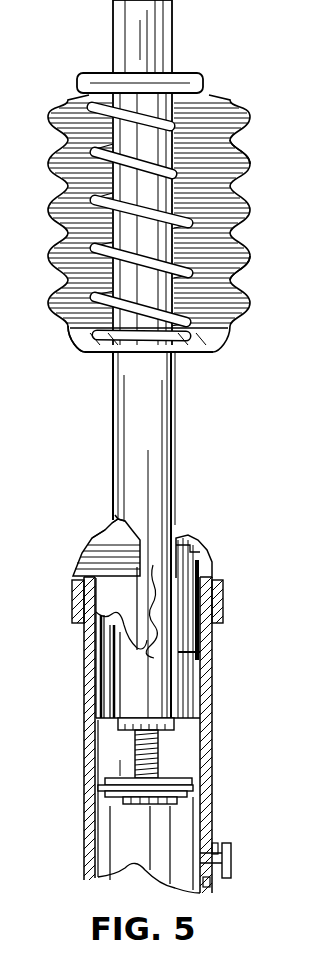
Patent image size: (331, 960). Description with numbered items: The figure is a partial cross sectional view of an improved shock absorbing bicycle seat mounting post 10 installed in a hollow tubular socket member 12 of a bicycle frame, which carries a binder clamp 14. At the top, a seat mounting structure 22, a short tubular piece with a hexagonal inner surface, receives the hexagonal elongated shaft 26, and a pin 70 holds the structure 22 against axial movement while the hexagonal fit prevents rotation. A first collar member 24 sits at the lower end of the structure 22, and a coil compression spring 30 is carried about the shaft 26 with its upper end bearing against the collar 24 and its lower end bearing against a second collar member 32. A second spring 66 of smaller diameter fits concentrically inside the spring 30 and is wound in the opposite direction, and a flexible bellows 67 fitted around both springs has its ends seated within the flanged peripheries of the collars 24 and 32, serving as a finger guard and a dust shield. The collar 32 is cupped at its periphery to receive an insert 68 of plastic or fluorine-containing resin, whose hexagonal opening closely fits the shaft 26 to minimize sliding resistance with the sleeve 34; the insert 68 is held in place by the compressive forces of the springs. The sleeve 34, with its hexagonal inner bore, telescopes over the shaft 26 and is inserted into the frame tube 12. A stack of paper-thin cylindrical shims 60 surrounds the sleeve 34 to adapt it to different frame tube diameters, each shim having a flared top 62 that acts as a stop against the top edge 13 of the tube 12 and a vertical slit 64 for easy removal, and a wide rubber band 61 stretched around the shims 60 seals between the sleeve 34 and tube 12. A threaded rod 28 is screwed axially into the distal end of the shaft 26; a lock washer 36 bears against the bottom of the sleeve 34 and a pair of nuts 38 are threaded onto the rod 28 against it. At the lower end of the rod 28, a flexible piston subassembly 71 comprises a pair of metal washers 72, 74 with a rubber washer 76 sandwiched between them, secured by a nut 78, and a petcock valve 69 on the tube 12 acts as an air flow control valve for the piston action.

The seat mounting post 10 is at (242, 82).
The hollow tubular socket member 12 is at (212, 677).
The top edge 13 is at (205, 550).
The binder clamp 14 is at (222, 598).
The seat mounting structure 22 is at (173, 38).
The first collar member 24 is at (197, 82).
The elongated shaft 26 is at (183, 125).
The threaded rod 28 is at (160, 758).
The coil compression spring 30 is at (240, 233).
The second collar member 32 is at (207, 350).
The sleeve 34 is at (180, 419).
The lock washer 36 is at (120, 722).
The nuts 38 is at (174, 731).
The cylindrical shims 60 is at (202, 647).
The rubber band 61 is at (97, 543).
The flared top 62 is at (115, 523).
The vertical slit 64 is at (143, 585).
The second spring 66 is at (228, 280).
The bellows 67 is at (243, 158).
The insert 68 is at (88, 353).
The petcock valve 69 is at (231, 857).
The pin 70 is at (140, 22).
The subassembly 71 is at (120, 768).
The metal washer 72 is at (193, 785).
The metal washer 74 is at (193, 800).
The rubber washer 76 is at (193, 788).
The nut 78 is at (130, 805).